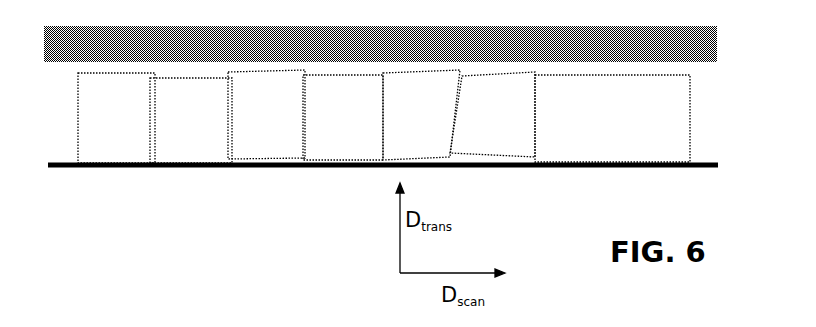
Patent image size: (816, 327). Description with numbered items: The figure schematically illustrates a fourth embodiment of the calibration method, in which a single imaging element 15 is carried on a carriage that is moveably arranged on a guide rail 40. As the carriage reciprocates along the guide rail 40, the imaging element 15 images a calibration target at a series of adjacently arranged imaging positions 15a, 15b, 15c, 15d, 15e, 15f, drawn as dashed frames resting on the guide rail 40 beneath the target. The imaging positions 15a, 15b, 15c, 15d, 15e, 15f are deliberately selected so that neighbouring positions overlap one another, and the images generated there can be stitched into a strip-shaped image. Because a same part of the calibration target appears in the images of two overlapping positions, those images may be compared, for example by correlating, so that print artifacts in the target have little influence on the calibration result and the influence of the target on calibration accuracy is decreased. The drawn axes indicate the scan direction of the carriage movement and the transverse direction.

The imaging element 15 is at (116, 118).
The imaging position 15a is at (191, 120).
The imaging position 15b is at (266, 114).
The imaging position 15c is at (343, 117).
The imaging position 15d is at (421, 115).
The imaging position 15e is at (492, 114).
The imaging position 15f is at (612, 118).
The guide rail 40 is at (220, 165).